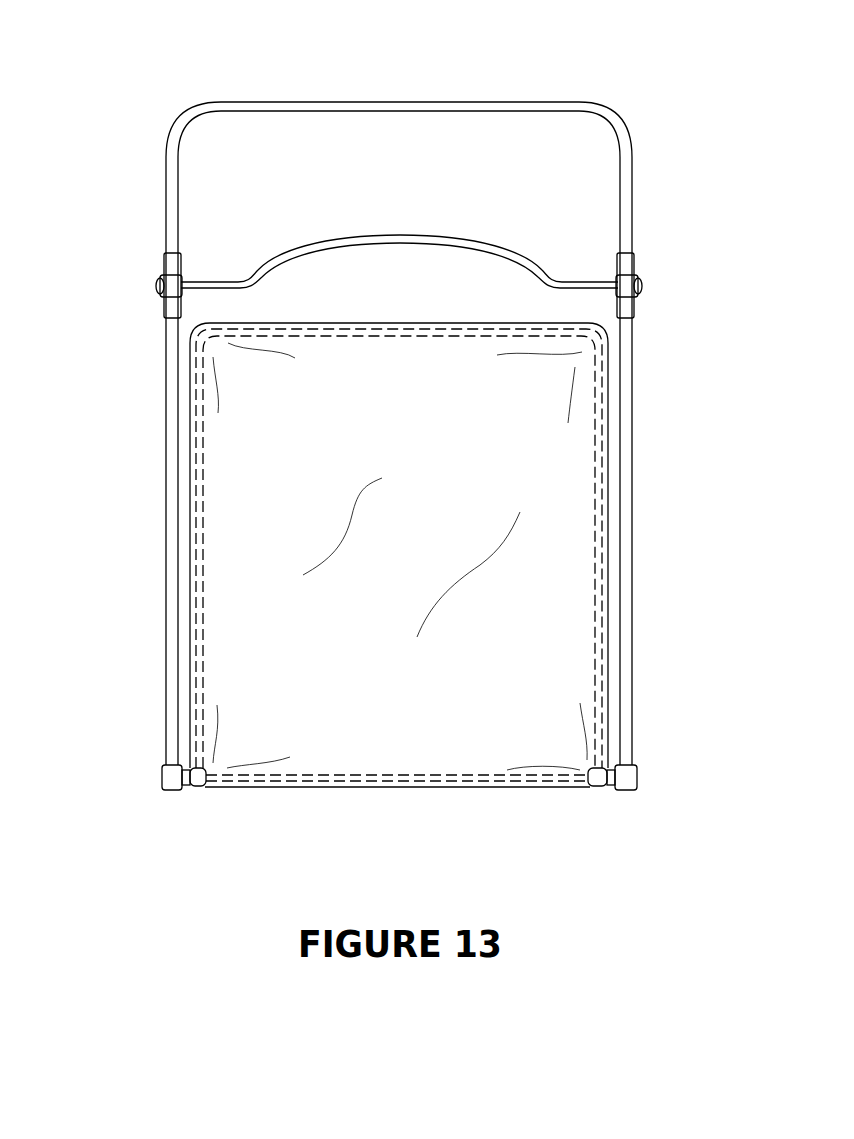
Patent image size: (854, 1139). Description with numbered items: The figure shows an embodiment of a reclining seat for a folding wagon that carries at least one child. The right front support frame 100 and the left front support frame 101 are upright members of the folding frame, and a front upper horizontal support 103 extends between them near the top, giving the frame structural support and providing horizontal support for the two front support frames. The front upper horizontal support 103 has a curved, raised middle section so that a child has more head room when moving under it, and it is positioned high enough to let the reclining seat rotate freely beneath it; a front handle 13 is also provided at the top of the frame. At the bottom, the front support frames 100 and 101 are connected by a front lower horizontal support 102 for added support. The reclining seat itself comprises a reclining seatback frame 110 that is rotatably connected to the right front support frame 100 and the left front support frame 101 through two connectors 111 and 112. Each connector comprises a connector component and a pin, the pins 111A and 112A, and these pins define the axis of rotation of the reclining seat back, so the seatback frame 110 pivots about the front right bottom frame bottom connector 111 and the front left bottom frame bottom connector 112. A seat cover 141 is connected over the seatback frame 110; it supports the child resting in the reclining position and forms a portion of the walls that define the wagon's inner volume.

The front handle 13 is at (387, 103).
The right front support frame 100 is at (168, 508).
The left front support frame 101 is at (632, 508).
The front lower horizontal support 102 is at (400, 788).
The front upper horizontal support 103 is at (400, 235).
The reclining seatback frame 110 is at (603, 436).
The seat cover 141 is at (267, 585).
The front right bottom frame bottom connector 111 is at (210, 785).
The pin 111A is at (200, 790).
The front left bottom frame bottom connector 112 is at (588, 785).
The pin 112A is at (603, 790).